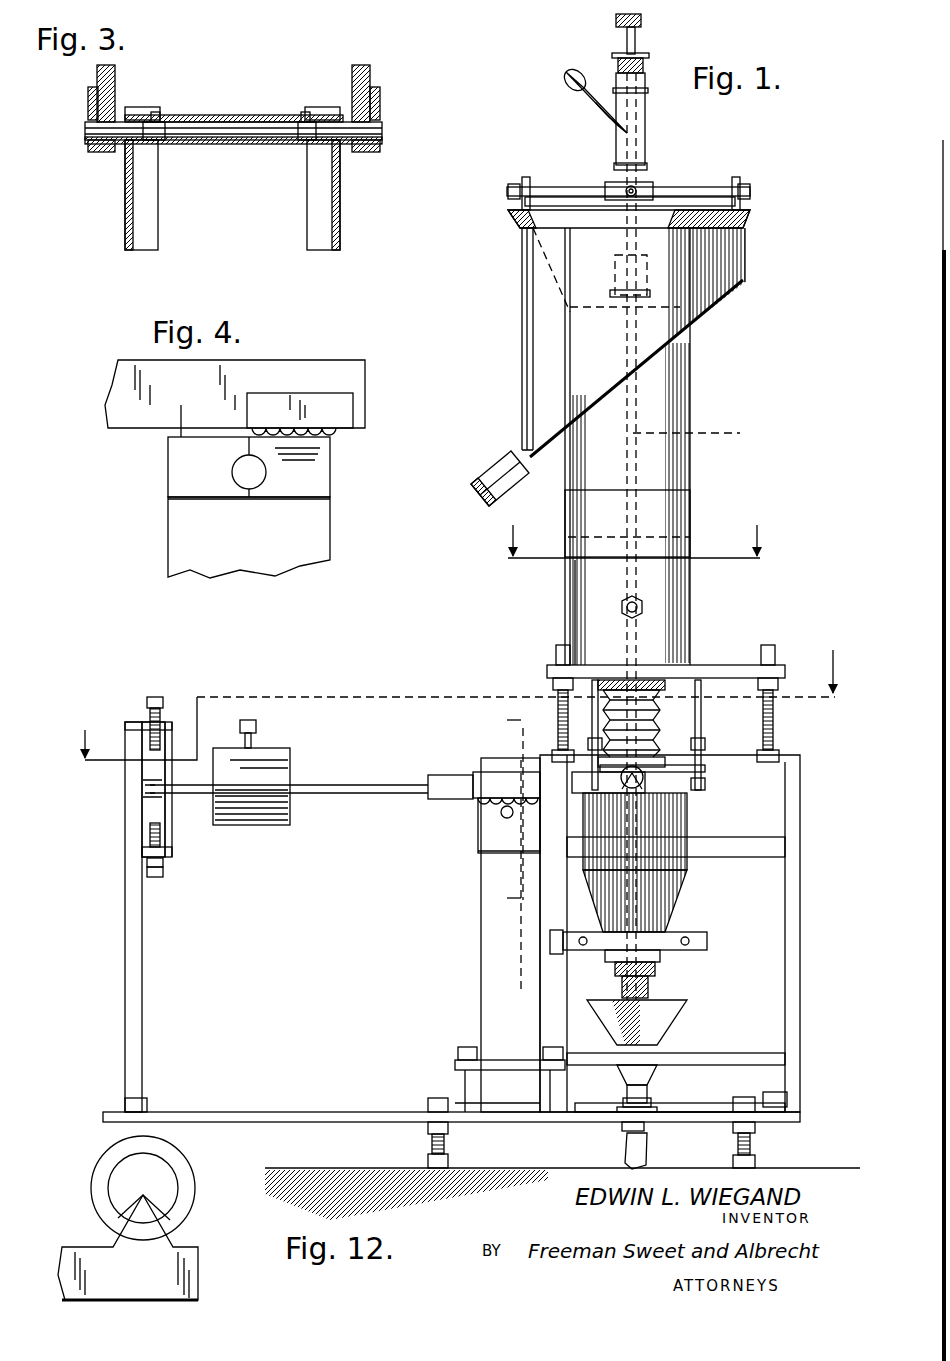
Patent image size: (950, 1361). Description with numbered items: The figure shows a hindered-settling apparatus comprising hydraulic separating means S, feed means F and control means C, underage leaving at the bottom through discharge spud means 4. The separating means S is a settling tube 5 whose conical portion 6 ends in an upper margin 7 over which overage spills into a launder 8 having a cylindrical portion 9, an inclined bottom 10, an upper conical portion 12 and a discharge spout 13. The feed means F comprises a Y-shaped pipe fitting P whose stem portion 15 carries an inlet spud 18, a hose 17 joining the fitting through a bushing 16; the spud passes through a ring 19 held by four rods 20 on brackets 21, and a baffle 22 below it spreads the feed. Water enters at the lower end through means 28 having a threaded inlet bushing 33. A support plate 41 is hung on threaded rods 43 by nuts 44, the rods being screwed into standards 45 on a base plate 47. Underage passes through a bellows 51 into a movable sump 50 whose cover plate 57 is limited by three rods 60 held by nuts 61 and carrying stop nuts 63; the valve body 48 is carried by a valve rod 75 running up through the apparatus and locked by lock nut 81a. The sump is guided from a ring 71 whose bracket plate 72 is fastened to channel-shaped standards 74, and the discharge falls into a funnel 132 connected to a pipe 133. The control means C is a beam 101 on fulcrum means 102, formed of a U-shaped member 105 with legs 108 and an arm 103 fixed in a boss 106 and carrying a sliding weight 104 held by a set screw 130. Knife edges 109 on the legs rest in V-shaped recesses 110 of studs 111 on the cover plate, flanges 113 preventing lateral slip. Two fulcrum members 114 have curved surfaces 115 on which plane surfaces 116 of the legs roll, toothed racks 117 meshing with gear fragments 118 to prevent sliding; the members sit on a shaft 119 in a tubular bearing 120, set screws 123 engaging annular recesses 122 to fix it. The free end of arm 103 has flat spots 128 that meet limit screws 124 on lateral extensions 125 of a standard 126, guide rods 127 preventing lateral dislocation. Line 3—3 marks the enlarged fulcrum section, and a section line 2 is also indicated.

In FIG. 1, the section line 2- 2 is at (632, 2).
In FIG. 1, the line 3— 3 is at (526, 801).
In FIG. 1, the discharge spud means 4 is at (662, 980).
In FIG. 1, the settling column or tube 5 is at (688, 475).
In FIG. 1, the conical portion 6 is at (545, 262).
In FIG. 1, the upper margin 7 is at (690, 200).
In FIG. 1, the launder 8 is at (518, 305).
In FIG. 1, the cylindrical portion 9 is at (524, 345).
In FIG. 1, the inclined bottom 10 is at (706, 314).
In FIG. 1, the conical portion 12 is at (748, 222).
In FIG. 1, the discharge spout 13 is at (500, 442).
In FIG. 1, the stem portion 15 is at (647, 150).
In FIG. 1, the bushing 16 is at (592, 110).
In FIG. 1, the hose 17 is at (580, 92).
In FIG. 1, the inlet spud or pipe 18 is at (648, 167).
In FIG. 1, the ring 19 is at (605, 188).
In FIG. 1, the rods 20 is at (548, 187).
In FIG. 1, the brackets 21 is at (522, 190).
In FIG. 1, the baffle 22 is at (612, 290).
In FIG. 1, the means for admitting water 28 is at (692, 605).
In FIG. 1, the threaded inlet bushing 33 is at (620, 602).
In FIG. 1, the support plate 41 is at (746, 664).
In FIG. 1, the threaded rods 43 is at (558, 705).
In FIG. 1, the nuts 44 is at (601, 124).
In FIG. 1, the standards 45 is at (556, 918).
In FIG. 1, the base plate 47 is at (290, 1112).
In FIG. 1, the valve body 48 is at (662, 935).
In FIG. 1, the receptacle or sump 50 is at (692, 826).
In FIG. 1, the bellows 51 is at (665, 718).
In FIG. 1, the cover plate 57 is at (722, 770).
In FIG. 1, the rods 60 is at (594, 700).
In FIG. 1, the nuts 61 is at (680, 680).
In FIG. 1, the stop nuts 63 is at (706, 745).
In FIG. 1, the ring 71 is at (708, 940).
In FIG. 1, the bracket plate 72 is at (516, 887).
In FIG. 3, the channel shaped standards 74 is at (128, 225).
In FIG. 4, the channel shaped standards 74 is at (312, 540).
In FIG. 1, the channel shaped standards 74 is at (490, 998).
In FIG. 1, the valve rod 75 is at (702, 434).
In FIG. 1, the lock nut 81a is at (652, 55).
In FIG. 1, the beam 101 is at (381, 780).
In FIG. 3, the fulcrum means 102 is at (360, 158).
In FIG. 4, the fulcrum means 102 is at (163, 464).
In FIG. 1, the fulcrum means 102 is at (478, 826).
In FIG. 1, the arm 103 is at (312, 794).
In FIG. 1, the weight 104 is at (280, 762).
In FIG. 4, the U-shaped member 105 is at (316, 358).
In FIG. 1, the U-shaped member 105 is at (478, 768).
In FIG. 1, the boss 106 is at (430, 793).
In FIG. 3, the legs 108 is at (112, 82).
In FIG. 4, the legs 108 is at (118, 392).
In FIG. 1, the legs 108 is at (510, 772).
In FIG. 1, the knife edges 109 is at (636, 792).
In FIG. 12, the knife edges 109 is at (145, 1232).
In FIG. 1, the V-shaped recesses 110 is at (640, 784).
In FIG. 12, the V-shaped recesses 110 is at (107, 1207).
In FIG. 1, the studs 111 is at (622, 786).
In FIG. 12, the studs 111 is at (105, 1206).
In FIG. 12, the washers or flanges 113 is at (172, 1163).
In FIG. 3, the fulcrum members 114 is at (378, 150).
In FIG. 4, the fulcrum members 114 is at (175, 474).
In FIG. 1, the fulcrum members 114 is at (480, 855).
In FIG. 4, the curved upper surface 115 is at (192, 409).
In FIG. 4, the cooperating surface 116 is at (118, 428).
In FIG. 3, the toothed racks 117 is at (88, 95).
In FIG. 4, the toothed racks 117 is at (330, 410).
In FIG. 1, the toothed racks 117 is at (478, 795).
In FIG. 3, the fragments of toothed gearing 118 is at (95, 120).
In FIG. 4, the fragments of toothed gearing 118 is at (310, 472).
In FIG. 1, the fragments of toothed gearing 118 is at (508, 819).
In FIG. 3, the shaft 119 is at (225, 128).
In FIG. 4, the shaft 119 is at (245, 480).
In FIG. 1, the shaft 119 is at (505, 818).
In FIG. 3, the tubular bearing 120 is at (260, 118).
In FIG. 3, the annular recesses 122 is at (160, 140).
In FIG. 3, the set screws 123 is at (306, 115).
In FIG. 1, the adjustable limit screws 124 is at (150, 736).
In FIG. 1, the lateral extensions 125 is at (168, 735).
In FIG. 1, the standard 126 is at (145, 1003).
In FIG. 1, the rods 127 is at (168, 835).
In FIG. 1, the flat spots 128 is at (150, 784).
In FIG. 1, the set screw 130 is at (252, 735).
In FIG. 1, the funnel 132 is at (654, 1028).
In FIG. 3, the pipe or conduit 133 is at (157, 115).
In FIG. 1, the Y-shaped pipe fitting P is at (607, 118).
In FIG. 1, the feed means F is at (655, 130).
In FIG. 1, the hydraulic separating means S is at (695, 398).
In FIG. 1, the control means C is at (697, 806).